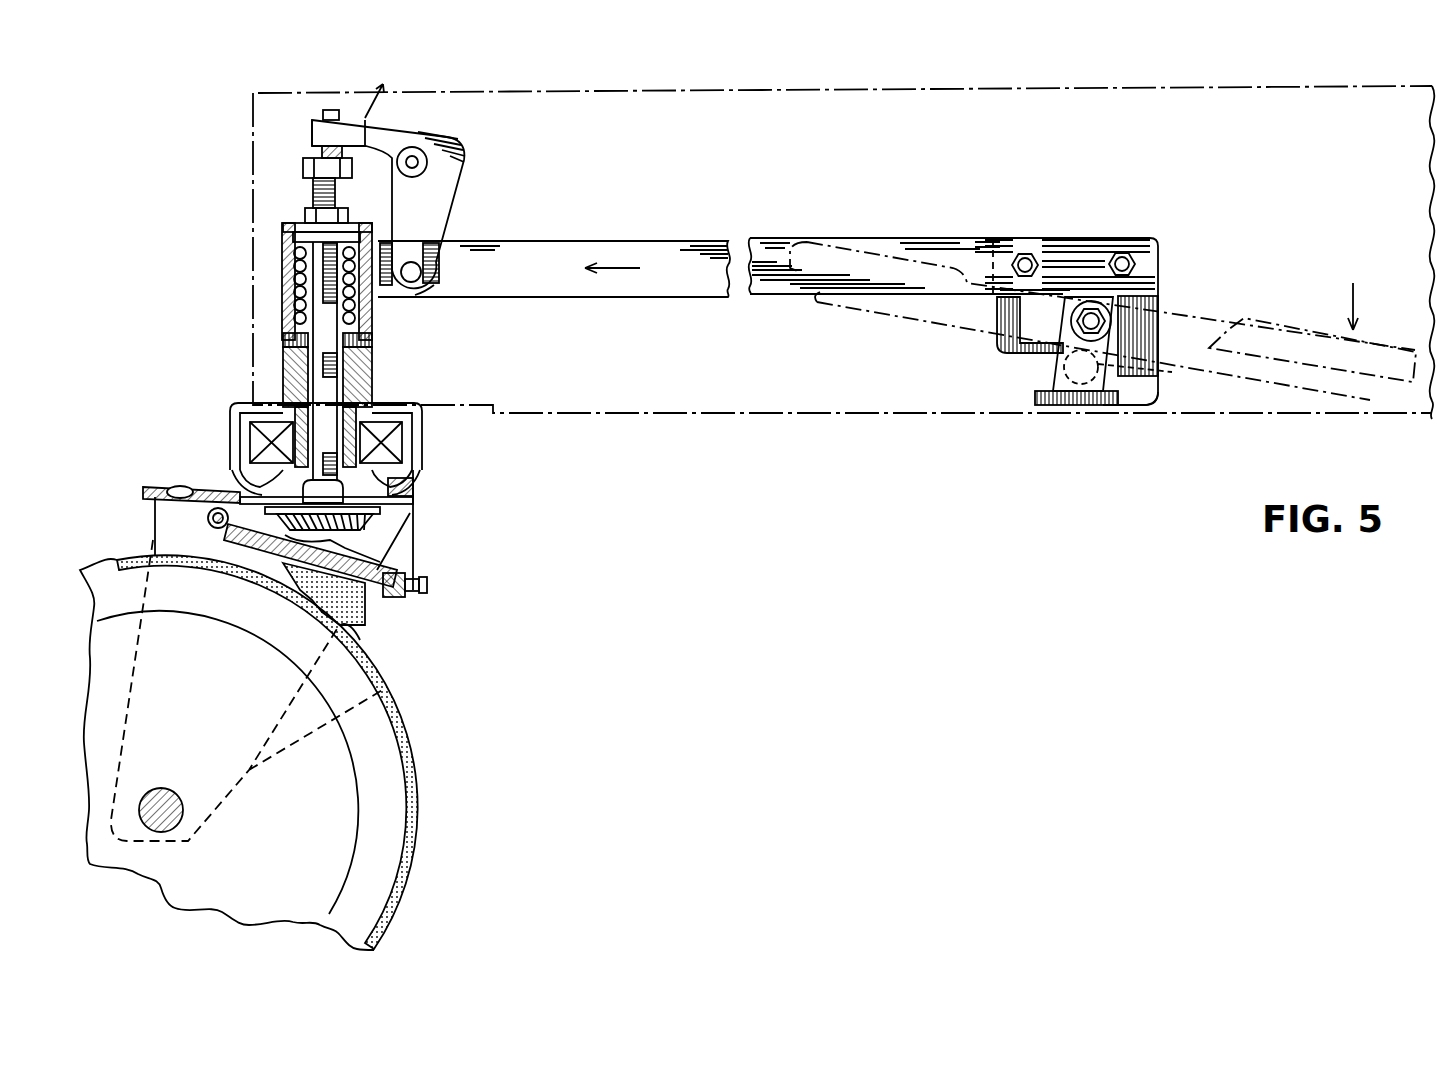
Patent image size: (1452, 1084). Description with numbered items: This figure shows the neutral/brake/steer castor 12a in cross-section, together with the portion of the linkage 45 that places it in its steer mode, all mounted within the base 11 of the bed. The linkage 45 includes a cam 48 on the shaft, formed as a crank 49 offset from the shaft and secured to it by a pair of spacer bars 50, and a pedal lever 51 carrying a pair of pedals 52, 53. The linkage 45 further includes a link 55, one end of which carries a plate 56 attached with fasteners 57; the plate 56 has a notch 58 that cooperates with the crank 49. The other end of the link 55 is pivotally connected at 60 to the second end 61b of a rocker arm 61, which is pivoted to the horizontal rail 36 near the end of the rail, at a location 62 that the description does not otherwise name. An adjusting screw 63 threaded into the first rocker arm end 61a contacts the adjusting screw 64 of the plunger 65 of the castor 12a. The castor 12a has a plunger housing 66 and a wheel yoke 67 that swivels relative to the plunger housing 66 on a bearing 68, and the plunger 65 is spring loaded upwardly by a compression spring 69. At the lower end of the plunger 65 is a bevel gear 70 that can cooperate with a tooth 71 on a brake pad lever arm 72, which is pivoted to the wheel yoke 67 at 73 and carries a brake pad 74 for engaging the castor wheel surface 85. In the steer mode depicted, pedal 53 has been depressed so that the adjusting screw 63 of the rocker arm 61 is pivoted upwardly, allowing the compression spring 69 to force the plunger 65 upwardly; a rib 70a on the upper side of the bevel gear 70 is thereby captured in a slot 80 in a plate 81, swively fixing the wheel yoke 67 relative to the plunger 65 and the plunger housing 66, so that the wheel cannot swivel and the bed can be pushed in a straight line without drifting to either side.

The base 11 is at (717, 422).
The neutral/brake/steer castor 12a is at (410, 745).
The horizontal rail 36 is at (822, 414).
The linkage 45 is at (830, 190).
The cam 48 is at (1110, 392).
The crank 49 is at (1063, 368).
The spacer bars 50 is at (1150, 310).
The pedal lever 51 is at (945, 327).
The pedal 52 is at (882, 248).
The pedal 53 is at (1318, 318).
The link 55 is at (605, 250).
The plate 56 is at (1162, 398).
The fasteners 57 is at (1125, 252).
The notch 58 is at (1150, 383).
The pivot connection 60 is at (440, 270).
The rocker arm 61 is at (460, 196).
The first rocker arm end 61a is at (312, 130).
The second end of rocker arm 61b is at (436, 298).
The pivot hole 62 is at (428, 162).
The adjusting screw 63 is at (333, 110).
The adjusting screw 64 is at (318, 195).
The plunger 65 is at (318, 357).
The plunger housing 66 is at (370, 362).
The wheel yoke 67 is at (155, 548).
The bearing 68 is at (233, 436).
The compression spring 69 is at (282, 270).
The bevel gear 70 is at (420, 518).
The rib 70a is at (416, 486).
The tooth 71 is at (292, 535).
The brake pad lever arm 72 is at (270, 545).
The pivot 73 is at (210, 527).
The brake pad 74 is at (373, 617).
The slot 80 is at (415, 503).
The plate 81 is at (236, 485).
The castor wheel surface 85 is at (365, 650).